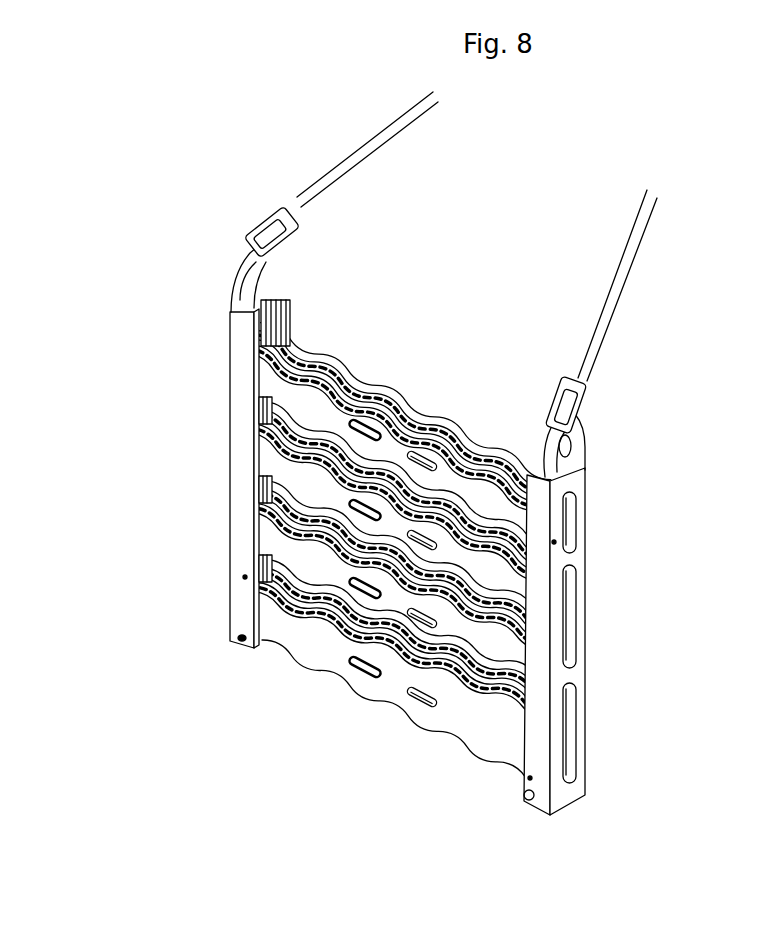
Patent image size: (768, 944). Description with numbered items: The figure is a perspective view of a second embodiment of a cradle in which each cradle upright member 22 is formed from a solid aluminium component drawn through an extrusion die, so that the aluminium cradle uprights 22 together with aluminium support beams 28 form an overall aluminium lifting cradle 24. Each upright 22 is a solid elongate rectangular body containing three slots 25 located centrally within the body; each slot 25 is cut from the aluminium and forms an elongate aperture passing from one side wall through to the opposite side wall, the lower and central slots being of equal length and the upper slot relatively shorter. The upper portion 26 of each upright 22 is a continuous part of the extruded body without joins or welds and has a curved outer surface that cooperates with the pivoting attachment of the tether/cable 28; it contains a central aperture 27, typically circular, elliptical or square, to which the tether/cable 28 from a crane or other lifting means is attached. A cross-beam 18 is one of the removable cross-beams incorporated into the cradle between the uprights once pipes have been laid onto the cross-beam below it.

The cross-beam 18 is at (405, 534).
The cradle upright member 22 is at (540, 782).
The aluminium lifting cradle 24 is at (315, 388).
The slot 25 is at (566, 525).
The upper portion 26 is at (230, 287).
The central aperture 27 is at (237, 262).
The tether/cable 28 is at (352, 152).